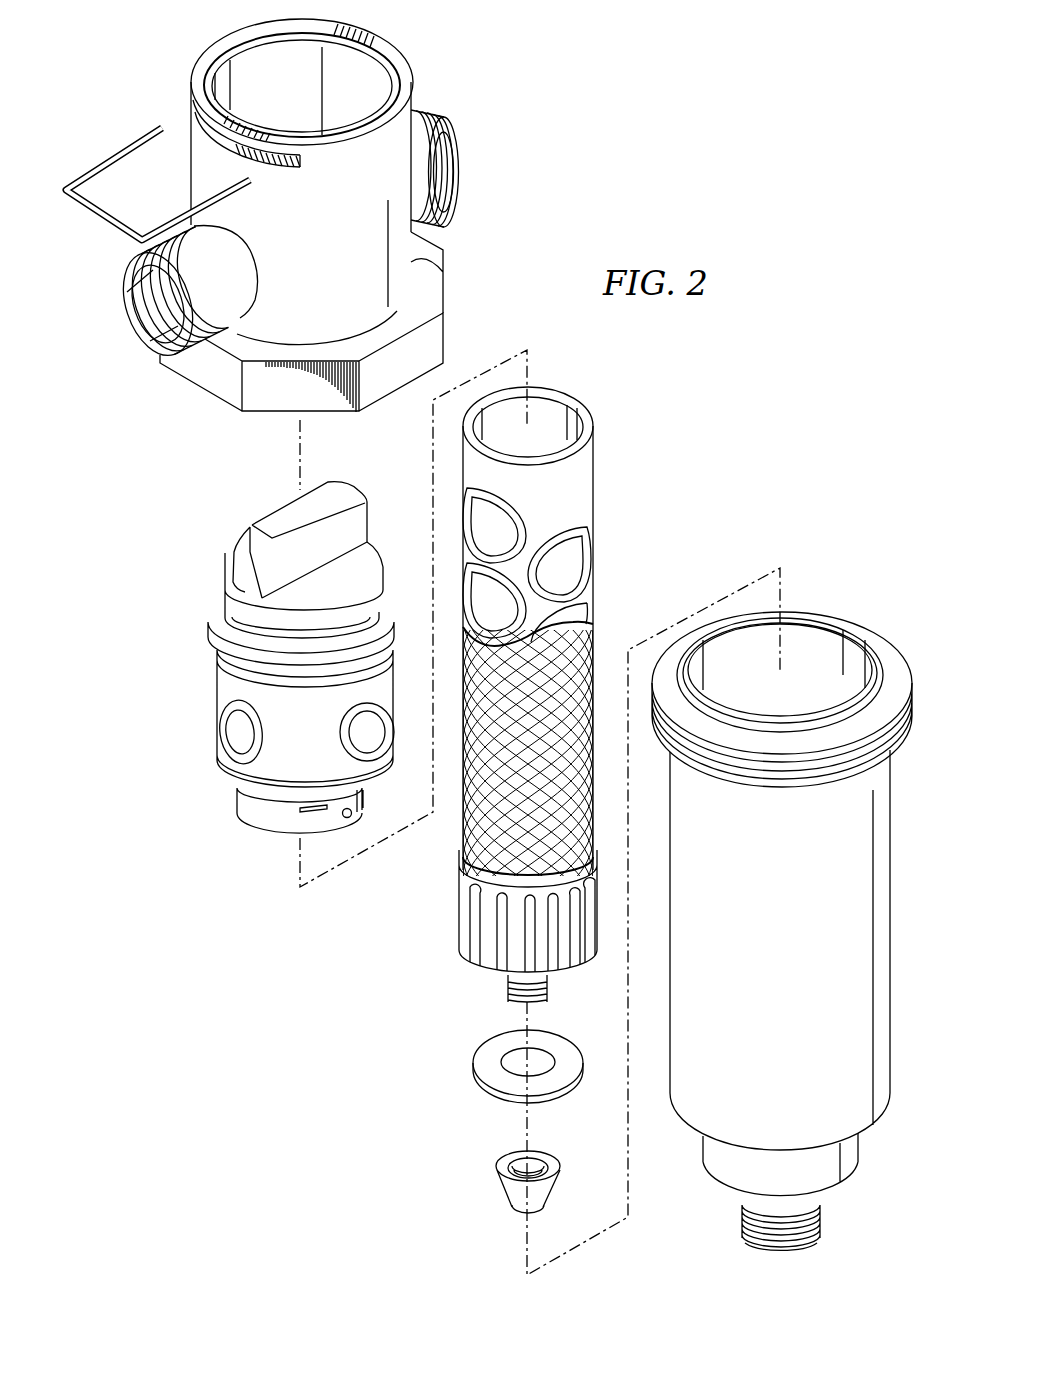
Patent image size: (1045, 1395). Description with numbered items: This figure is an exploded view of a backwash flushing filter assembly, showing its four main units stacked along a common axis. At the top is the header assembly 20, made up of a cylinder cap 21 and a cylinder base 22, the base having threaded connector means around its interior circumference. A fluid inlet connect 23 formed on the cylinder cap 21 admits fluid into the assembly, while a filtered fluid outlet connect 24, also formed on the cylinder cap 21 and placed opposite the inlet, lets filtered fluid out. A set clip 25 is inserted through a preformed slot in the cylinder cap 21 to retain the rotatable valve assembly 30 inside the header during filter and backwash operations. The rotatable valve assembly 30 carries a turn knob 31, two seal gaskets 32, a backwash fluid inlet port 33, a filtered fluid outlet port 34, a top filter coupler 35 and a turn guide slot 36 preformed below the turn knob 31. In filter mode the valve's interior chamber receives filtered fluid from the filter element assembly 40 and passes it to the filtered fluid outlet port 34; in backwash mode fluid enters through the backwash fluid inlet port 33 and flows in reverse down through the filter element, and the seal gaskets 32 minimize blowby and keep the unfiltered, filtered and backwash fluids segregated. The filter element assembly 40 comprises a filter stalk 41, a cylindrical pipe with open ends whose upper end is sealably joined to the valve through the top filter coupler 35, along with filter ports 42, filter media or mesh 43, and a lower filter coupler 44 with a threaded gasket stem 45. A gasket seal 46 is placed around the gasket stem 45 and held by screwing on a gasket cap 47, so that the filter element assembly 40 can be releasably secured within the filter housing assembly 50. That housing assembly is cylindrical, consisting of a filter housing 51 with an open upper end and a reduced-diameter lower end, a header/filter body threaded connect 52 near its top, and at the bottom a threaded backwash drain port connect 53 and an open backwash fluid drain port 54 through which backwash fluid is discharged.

The header assembly 20 is at (478, 110).
The cylinder cap 21 is at (443, 272).
The cylinder base 22 is at (210, 380).
The fluid inlet connect 23 is at (132, 330).
The filtered fluid outlet connect 24 is at (458, 188).
The set clip 25 is at (110, 149).
The rotatable valve assembly 30 is at (200, 540).
The turn knob 31 is at (278, 517).
The seal gaskets 32 is at (210, 642).
The backwash fluid inlet port 33 is at (238, 742).
The filtered fluid outlet port 34 is at (362, 733).
The top filter coupler 35 is at (255, 815).
The turn guide slot 36 is at (233, 627).
The filter element assembly 40 is at (633, 505).
The filter stalk 41 is at (593, 463).
The filter ports 42 is at (573, 558).
The filter media or mesh 43 is at (567, 625).
The lower filter coupler 44 is at (460, 913).
The threaded gasket stem 45 is at (508, 983).
The gasket seal 46 is at (473, 1068).
The gasket cap 47 is at (505, 1190).
The filter housing assembly 50 is at (842, 580).
The filter housing 51 is at (690, 1113).
The header/filter body threaded connect 52 is at (812, 777).
The backwash drain port connect 53 is at (742, 1222).
The backwash fluid drain port 54 is at (785, 1262).